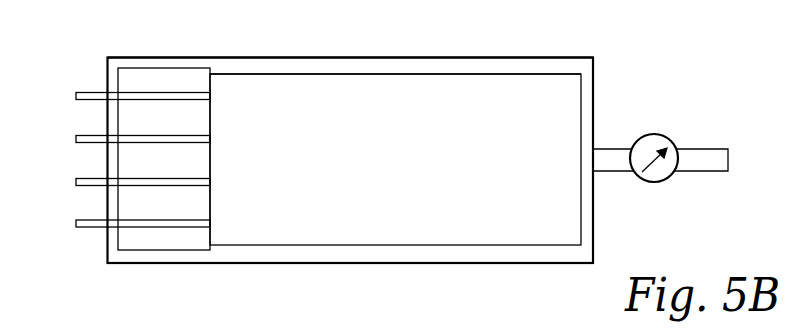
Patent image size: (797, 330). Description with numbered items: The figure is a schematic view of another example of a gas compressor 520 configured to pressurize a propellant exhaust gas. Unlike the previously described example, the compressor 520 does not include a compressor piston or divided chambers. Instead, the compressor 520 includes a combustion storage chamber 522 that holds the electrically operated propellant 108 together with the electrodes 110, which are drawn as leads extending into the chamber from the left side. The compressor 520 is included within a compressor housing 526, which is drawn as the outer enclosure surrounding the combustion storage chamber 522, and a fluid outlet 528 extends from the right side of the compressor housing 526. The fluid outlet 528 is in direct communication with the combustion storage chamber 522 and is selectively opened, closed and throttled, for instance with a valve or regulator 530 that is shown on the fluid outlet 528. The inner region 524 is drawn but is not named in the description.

The electrically operated propellant 108 is at (146, 80).
The electrodes 110 is at (76, 93).
The compressor 520 is at (328, 255).
The combustion storage chamber 522 is at (336, 75).
The chamber 524 is at (481, 92).
The compressor housing 526 is at (250, 57).
The fluid outlet 528 is at (613, 149).
The valve or regulator 530 is at (666, 182).